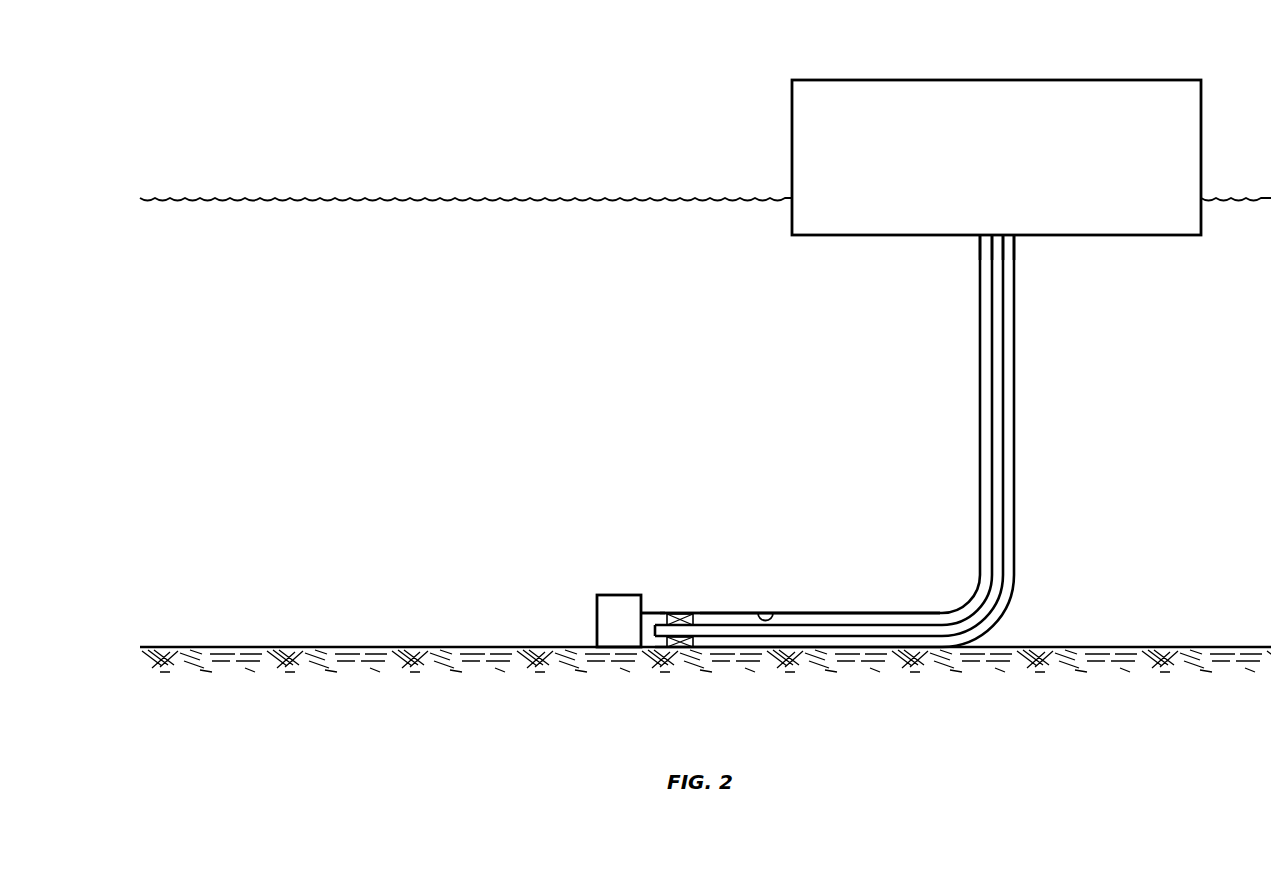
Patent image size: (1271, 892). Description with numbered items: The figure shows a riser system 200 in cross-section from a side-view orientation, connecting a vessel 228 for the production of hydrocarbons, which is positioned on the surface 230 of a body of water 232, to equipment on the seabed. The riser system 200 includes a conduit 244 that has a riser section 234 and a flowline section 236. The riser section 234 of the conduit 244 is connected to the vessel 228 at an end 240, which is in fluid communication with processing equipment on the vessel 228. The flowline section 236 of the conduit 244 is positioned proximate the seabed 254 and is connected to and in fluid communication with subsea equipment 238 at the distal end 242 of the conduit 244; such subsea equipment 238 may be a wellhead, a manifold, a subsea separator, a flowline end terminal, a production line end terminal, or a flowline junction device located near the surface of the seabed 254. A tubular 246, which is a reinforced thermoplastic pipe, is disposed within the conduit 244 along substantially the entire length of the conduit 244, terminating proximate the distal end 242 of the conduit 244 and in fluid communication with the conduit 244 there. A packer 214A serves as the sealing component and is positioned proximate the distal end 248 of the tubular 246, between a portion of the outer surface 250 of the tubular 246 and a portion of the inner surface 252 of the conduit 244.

The riser system 200 is at (776, 340).
The packer 214A is at (698, 613).
The vessel 228 is at (792, 97).
The surface 230 is at (507, 198).
The body of water 232 is at (433, 374).
The riser section 234 is at (1075, 423).
The flowline section 236 is at (790, 543).
The subsea equipment 238 is at (597, 609).
The end 240 is at (1015, 236).
The distal end 242 is at (645, 613).
The conduit 244 is at (980, 305).
The tubular 246 is at (997, 338).
The distal end 248 is at (655, 640).
The outer surface 250 is at (820, 613).
The inner surface 252 is at (770, 612).
The seabed 254 is at (433, 720).